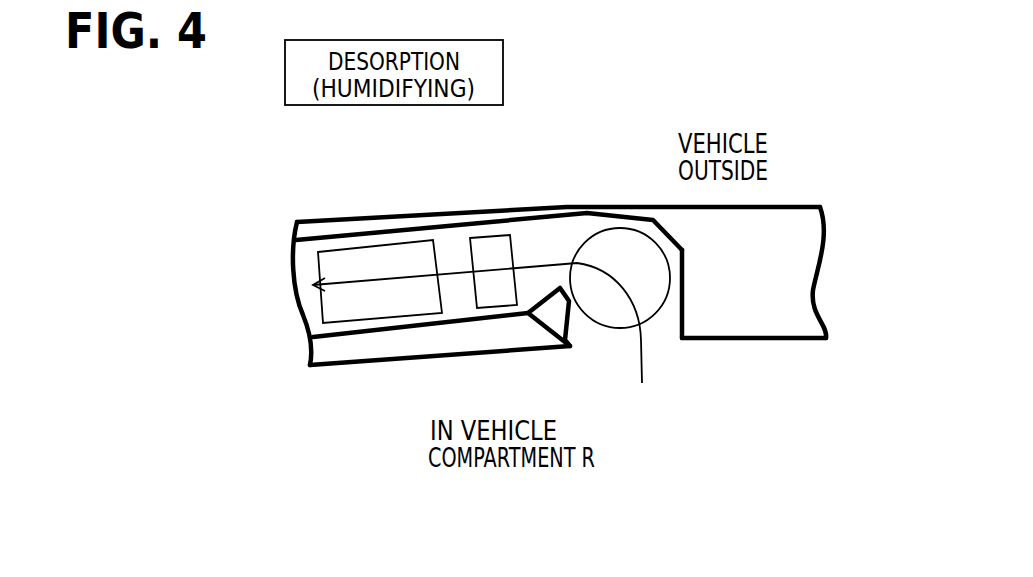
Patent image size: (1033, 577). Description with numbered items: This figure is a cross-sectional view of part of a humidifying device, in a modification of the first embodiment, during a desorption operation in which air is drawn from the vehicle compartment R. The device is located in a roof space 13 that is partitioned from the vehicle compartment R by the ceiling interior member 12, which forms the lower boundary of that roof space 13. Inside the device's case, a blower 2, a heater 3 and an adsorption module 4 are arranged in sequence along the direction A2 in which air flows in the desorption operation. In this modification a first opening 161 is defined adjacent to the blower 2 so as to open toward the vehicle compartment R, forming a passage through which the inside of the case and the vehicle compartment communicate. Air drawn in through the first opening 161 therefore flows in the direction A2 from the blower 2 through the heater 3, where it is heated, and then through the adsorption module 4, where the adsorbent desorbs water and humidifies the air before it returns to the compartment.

The blower 2 is at (613, 233).
The heater 3 is at (485, 235).
The adsorption module 4 is at (413, 248).
The ceiling interior member 12 is at (742, 341).
The roof space 13 is at (757, 260).
The first opening 161 is at (690, 339).
The direction in which air flows in a desorption operation A2 is at (537, 262).